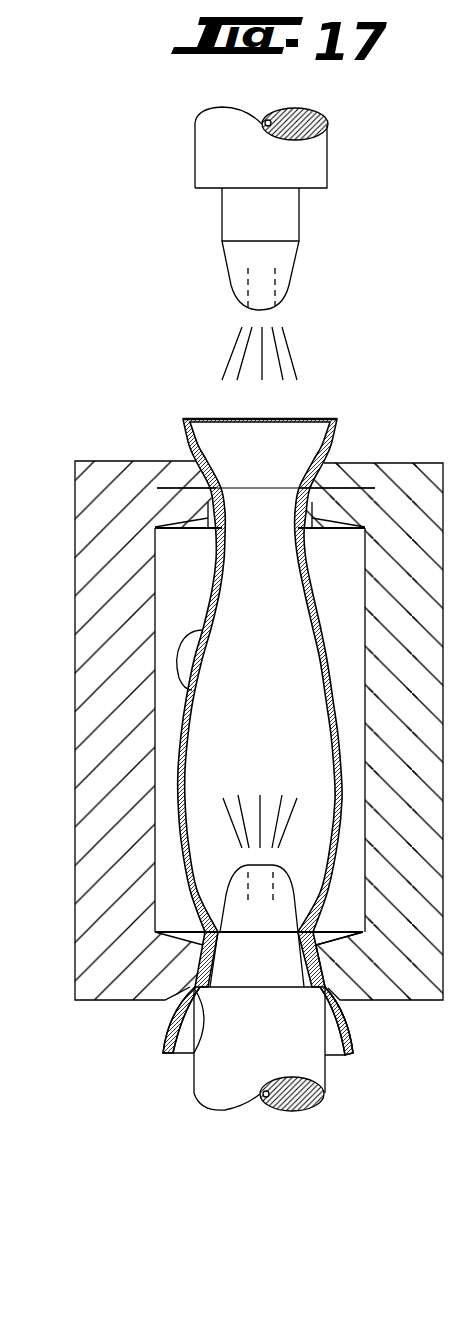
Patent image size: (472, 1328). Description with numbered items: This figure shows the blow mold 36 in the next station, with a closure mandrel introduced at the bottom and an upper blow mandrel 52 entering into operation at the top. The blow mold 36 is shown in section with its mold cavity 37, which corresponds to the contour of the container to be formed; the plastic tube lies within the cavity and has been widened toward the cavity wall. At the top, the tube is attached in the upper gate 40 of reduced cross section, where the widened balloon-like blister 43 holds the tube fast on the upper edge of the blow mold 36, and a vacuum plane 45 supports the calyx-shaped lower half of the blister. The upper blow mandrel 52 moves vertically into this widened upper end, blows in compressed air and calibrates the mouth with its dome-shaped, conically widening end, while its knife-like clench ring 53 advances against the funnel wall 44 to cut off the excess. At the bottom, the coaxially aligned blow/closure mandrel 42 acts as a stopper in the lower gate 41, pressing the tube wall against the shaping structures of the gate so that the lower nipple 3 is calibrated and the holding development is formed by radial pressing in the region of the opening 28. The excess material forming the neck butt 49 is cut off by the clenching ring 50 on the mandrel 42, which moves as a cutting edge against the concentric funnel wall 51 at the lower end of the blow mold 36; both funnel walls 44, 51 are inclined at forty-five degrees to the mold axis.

The clench ring 53 is at (328, 188).
The upper blow mandrel 52 is at (282, 250).
The blow mold 36 is at (248, 715).
The mold cavity 37 is at (152, 778).
The vacuum plane 45 is at (185, 487).
The funnel wall 44 is at (190, 484).
The balloon-like blister 43 is at (318, 482).
The upper gate 40 is at (373, 488).
The lower nipple 3 is at (203, 956).
The blow/closure mandrel 42 is at (247, 953).
The clenching ring 50 is at (195, 1053).
The funnel wall 51 is at (175, 992).
The neck butt 49 is at (354, 1040).
The lower gate 41 is at (320, 966).
The opening 28 is at (319, 960).